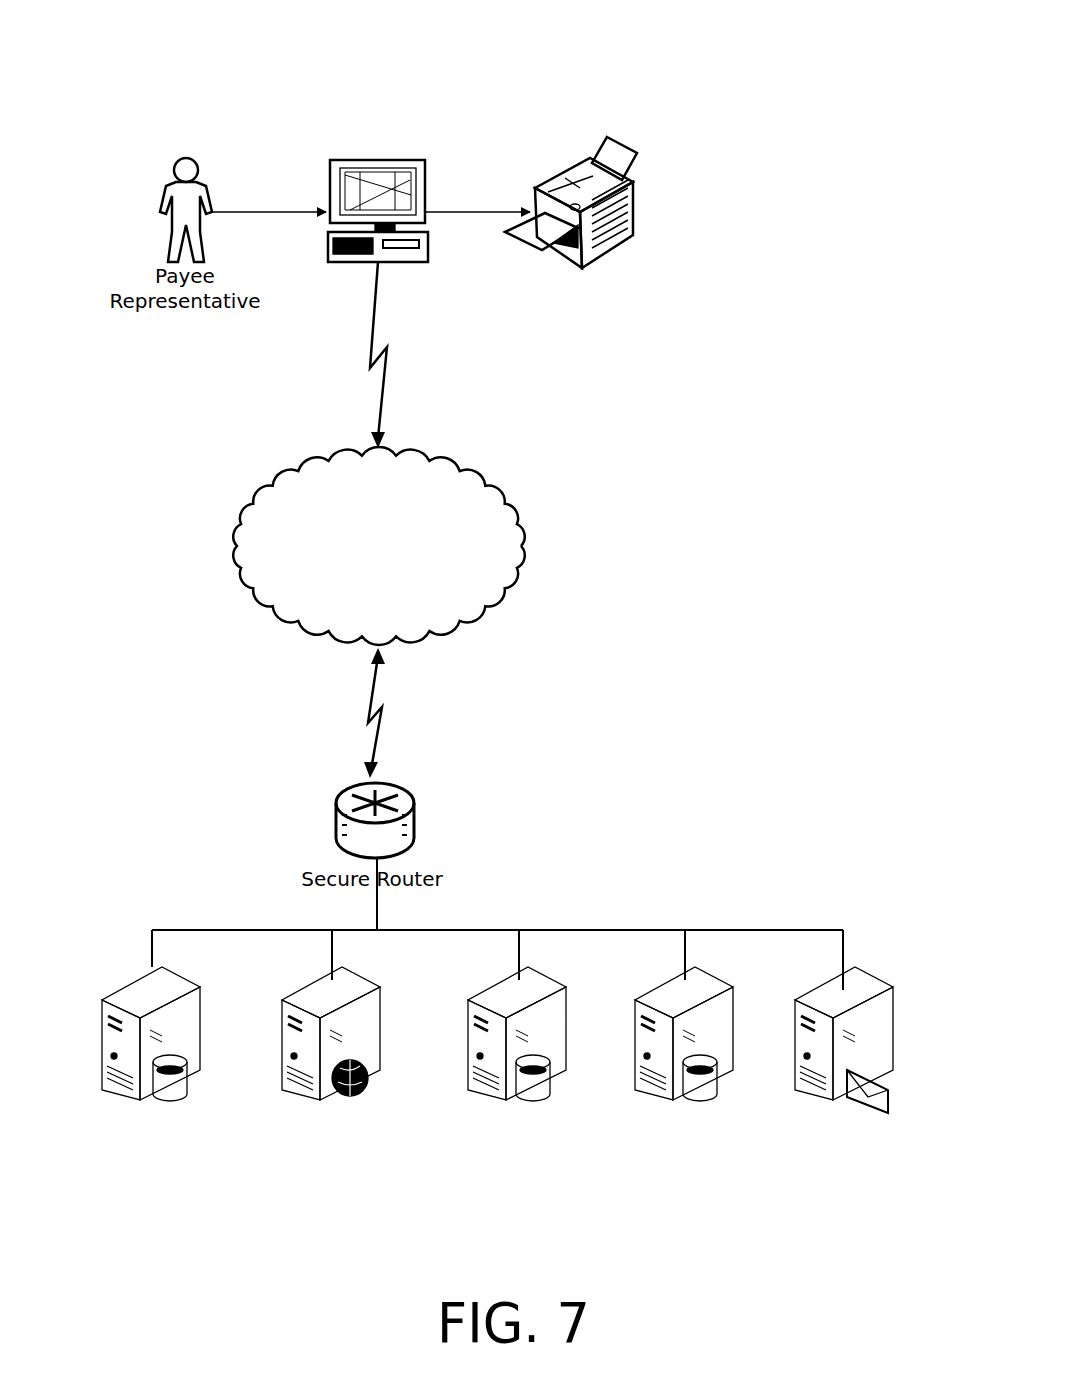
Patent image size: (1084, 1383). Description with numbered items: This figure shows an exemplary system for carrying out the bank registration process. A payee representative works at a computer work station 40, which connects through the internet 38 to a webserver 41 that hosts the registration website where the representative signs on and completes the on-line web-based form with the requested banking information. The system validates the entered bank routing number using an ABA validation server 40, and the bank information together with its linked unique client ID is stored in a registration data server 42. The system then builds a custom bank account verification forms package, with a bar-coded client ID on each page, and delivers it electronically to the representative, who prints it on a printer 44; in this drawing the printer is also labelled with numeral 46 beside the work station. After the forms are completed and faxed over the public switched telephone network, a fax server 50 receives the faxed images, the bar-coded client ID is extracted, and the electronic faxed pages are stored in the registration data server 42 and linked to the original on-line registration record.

The internet 38 is at (525, 517).
The computer work station 40 is at (393, 167).
The webserver 41 is at (282, 1093).
The registration data server 42 is at (543, 977).
The printer 44 is at (873, 973).
The printer 46 is at (643, 220).
The fax server 50 is at (125, 983).